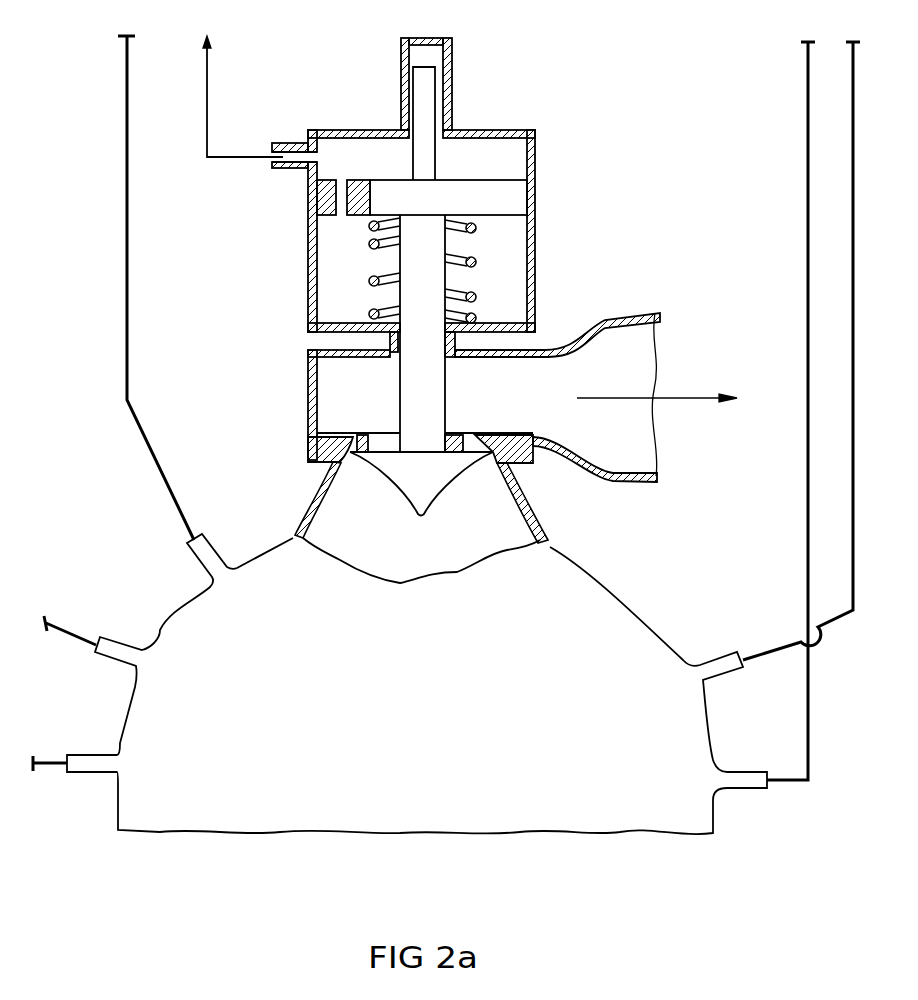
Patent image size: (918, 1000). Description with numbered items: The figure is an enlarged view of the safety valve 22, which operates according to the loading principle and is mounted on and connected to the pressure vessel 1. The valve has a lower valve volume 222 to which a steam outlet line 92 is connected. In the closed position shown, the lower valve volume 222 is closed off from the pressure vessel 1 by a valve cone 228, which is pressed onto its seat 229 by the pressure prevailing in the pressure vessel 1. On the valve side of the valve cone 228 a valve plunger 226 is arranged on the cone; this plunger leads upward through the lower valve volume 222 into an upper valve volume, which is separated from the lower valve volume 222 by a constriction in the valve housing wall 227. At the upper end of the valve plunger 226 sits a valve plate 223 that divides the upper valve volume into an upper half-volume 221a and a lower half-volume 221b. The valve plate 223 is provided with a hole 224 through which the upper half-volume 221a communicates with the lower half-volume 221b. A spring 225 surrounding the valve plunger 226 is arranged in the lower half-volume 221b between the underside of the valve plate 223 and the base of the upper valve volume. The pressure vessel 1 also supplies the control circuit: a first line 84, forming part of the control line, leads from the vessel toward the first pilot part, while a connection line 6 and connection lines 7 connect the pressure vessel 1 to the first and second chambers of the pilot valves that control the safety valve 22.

The pressure vessel 1 is at (663, 825).
The connection line 6 is at (68, 630).
The connection lines 7 is at (808, 158).
The safety valve 22 is at (531, 116).
The first line 84 is at (125, 63).
The steam outlet line 92 is at (633, 445).
The upper half-volume 221a is at (518, 152).
The lower half-volume 221b is at (518, 298).
The lower valve volume 222 is at (330, 378).
The valve plate 223 is at (518, 205).
The hole 224 is at (312, 202).
The spring 225 is at (372, 284).
The valve plunger 226 is at (410, 400).
The valve housing wall 227 is at (536, 243).
The valve cone 228 is at (447, 480).
The seat 229 is at (346, 440).